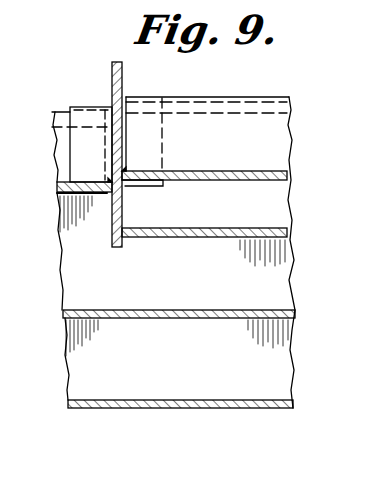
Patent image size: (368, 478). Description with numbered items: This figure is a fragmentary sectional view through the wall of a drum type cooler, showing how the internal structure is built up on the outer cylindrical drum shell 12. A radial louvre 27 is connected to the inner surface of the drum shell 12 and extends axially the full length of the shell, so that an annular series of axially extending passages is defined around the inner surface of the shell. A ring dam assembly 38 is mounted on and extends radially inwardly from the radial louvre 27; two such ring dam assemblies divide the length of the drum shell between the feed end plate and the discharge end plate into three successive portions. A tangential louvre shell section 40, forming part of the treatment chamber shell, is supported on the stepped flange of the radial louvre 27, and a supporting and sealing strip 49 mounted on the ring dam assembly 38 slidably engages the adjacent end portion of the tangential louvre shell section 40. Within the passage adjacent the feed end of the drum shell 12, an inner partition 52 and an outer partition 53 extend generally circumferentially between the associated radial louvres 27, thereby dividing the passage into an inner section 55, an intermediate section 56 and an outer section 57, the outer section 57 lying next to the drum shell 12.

The drum shell 12 is at (193, 409).
The radial louvre 27 is at (70, 373).
The ring dam assembly 38 is at (126, 80).
The tangential louvre shell section 40 is at (290, 116).
The supporting and sealing strip 49 is at (80, 106).
The inner partition 52 is at (207, 238).
The outer partition 53 is at (178, 318).
The inner section 55 is at (253, 213).
The intermediate section 56 is at (238, 293).
The outer section 57 is at (233, 373).